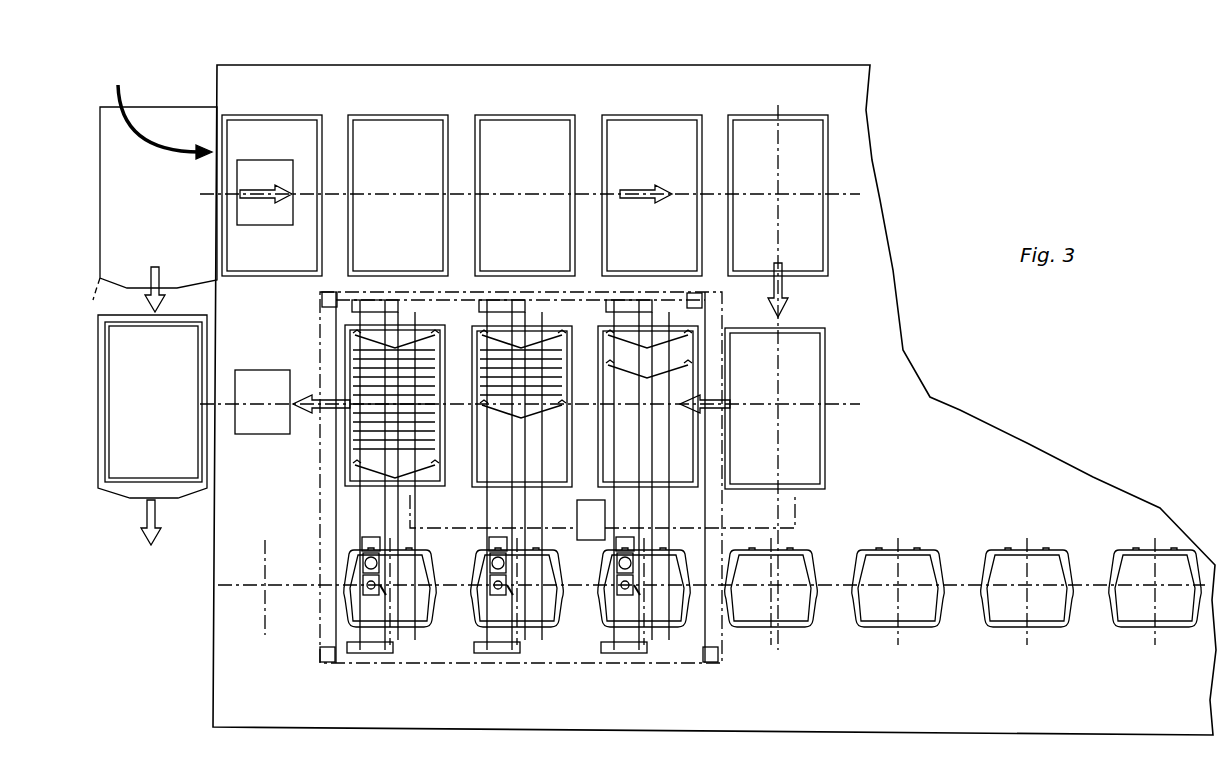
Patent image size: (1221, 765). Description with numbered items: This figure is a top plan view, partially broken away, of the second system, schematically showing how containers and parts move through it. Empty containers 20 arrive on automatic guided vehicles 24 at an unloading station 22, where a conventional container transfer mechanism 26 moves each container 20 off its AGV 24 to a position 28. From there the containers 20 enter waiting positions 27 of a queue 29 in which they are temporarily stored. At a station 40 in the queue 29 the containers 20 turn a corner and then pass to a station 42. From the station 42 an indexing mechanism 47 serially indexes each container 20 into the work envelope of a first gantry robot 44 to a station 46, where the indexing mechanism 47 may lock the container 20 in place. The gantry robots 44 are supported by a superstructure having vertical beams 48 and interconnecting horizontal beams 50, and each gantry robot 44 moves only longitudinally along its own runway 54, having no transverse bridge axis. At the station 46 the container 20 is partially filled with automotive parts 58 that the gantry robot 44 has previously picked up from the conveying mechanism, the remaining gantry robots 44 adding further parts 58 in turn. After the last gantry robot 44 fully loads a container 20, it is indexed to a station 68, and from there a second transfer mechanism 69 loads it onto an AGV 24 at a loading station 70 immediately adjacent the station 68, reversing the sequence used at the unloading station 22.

The container 20 is at (105, 387).
The unloading station 22 is at (135, 167).
The automatic guided vehicle 24 is at (98, 345).
The container transfer mechanism 26 is at (262, 225).
The waiting position 27 is at (746, 108).
The position 28 is at (262, 160).
The queue 29 is at (156, 112).
The station 40 is at (804, 174).
The station 42 is at (787, 398).
The gantry robot 44 is at (506, 600).
The station 46 is at (687, 427).
The indexing mechanism 47 is at (586, 541).
The vertical beam 48 is at (718, 665).
The horizontal beam 50 is at (462, 665).
The runway 54 is at (468, 499).
The automotive part 58 is at (1180, 625).
The station 68 is at (257, 442).
The second transfer mechanism 69 is at (233, 435).
The loading station 70 is at (151, 410).